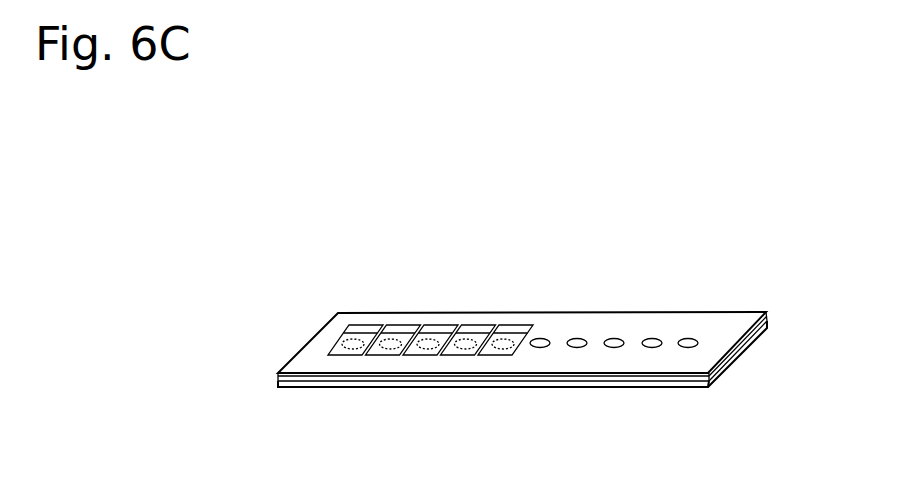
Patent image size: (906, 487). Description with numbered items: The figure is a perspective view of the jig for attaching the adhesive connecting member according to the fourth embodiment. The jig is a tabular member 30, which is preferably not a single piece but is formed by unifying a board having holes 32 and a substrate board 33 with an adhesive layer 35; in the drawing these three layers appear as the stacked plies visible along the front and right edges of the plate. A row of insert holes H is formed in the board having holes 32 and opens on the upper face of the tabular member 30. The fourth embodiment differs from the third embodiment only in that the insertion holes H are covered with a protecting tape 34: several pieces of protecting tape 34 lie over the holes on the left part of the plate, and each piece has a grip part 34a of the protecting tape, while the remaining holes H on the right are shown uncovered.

The tabular member 30 is at (779, 312).
The board having holes 32 is at (312, 352).
The substrate board 33 is at (323, 382).
The adhesive layer 35 is at (278, 373).
The protecting tape 34 is at (347, 333).
The grip part of the protecting tape 34a is at (443, 325).
The insert hole H is at (616, 337).